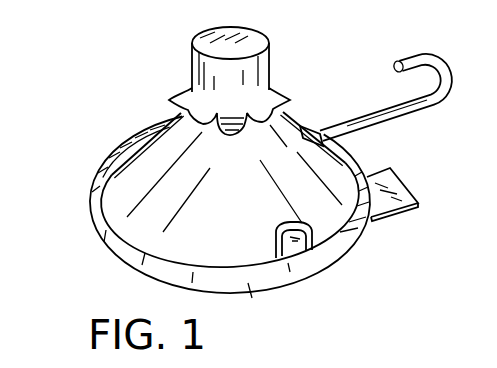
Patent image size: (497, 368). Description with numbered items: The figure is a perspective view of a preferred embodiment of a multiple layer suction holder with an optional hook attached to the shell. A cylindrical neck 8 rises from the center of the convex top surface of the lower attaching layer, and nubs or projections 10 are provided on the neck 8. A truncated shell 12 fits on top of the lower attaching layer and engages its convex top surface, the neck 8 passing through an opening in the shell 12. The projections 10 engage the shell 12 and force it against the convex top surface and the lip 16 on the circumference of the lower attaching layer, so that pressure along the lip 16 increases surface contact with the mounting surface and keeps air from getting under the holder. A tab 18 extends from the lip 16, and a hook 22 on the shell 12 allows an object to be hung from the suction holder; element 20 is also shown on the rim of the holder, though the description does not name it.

The cylindrical neck 8 is at (197, 63).
The nubs or projections 10 is at (281, 95).
The shell 12 is at (141, 148).
The lip 16 is at (249, 286).
The tab 18 is at (392, 197).
The clip 20 is at (299, 246).
The hook 22 is at (404, 59).